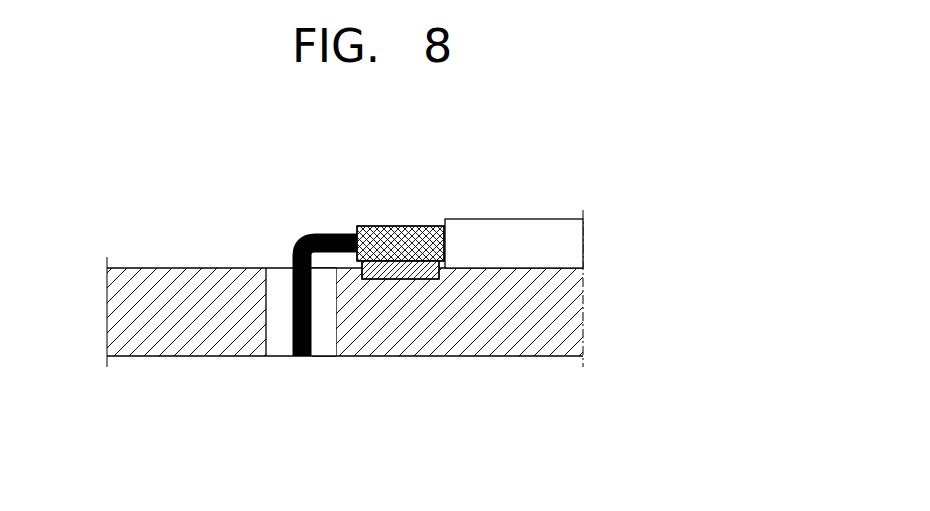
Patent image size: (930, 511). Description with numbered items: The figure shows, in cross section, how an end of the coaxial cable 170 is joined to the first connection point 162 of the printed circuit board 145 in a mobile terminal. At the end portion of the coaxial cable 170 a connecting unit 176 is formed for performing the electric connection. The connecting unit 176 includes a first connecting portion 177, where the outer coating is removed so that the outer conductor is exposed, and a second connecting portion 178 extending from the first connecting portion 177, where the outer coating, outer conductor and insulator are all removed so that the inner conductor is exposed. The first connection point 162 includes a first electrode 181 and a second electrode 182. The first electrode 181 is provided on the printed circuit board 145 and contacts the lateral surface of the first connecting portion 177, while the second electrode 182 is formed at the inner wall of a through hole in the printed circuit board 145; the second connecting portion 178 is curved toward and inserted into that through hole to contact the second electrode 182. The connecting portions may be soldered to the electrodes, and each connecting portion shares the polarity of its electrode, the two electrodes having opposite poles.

The printed circuit board 145 is at (173, 282).
The coaxial cable 170 is at (502, 211).
The connecting unit 176 is at (318, 155).
The first connecting portion 177 is at (406, 227).
The second connecting portion 178 is at (337, 233).
The first connection point 162 is at (308, 434).
The first electrode 181 is at (400, 275).
The second electrode 182 is at (322, 340).